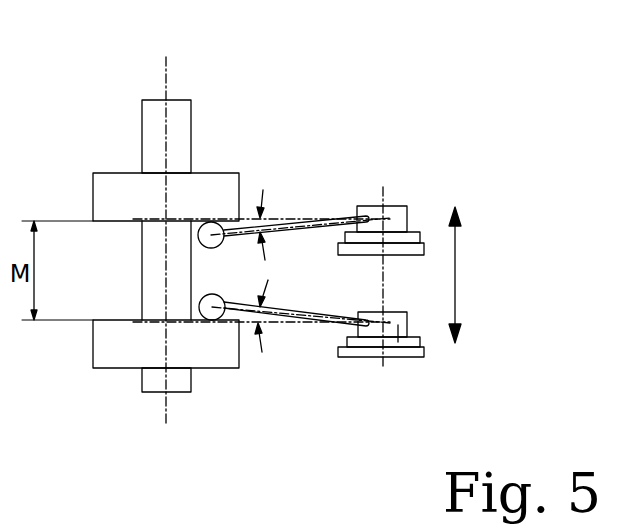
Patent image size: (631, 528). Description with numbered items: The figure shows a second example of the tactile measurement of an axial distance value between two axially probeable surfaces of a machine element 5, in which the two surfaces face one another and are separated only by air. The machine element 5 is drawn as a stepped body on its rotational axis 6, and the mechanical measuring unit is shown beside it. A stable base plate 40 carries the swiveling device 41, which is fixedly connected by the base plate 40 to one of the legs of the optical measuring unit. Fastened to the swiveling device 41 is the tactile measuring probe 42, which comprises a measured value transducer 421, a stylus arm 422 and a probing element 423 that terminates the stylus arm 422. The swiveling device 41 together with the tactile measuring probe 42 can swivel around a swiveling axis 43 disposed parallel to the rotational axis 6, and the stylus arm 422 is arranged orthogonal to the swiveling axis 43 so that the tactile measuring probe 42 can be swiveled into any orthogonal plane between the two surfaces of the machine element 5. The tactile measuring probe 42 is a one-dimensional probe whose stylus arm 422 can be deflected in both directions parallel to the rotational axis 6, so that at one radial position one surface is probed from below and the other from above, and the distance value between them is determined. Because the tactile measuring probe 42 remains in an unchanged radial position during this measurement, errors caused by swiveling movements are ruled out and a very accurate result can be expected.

The machine element 5 is at (105, 349).
The rotational axis 6 is at (163, 90).
The base plate 40 is at (423, 355).
The swiveling device 41 is at (415, 340).
The tactile measuring probe 42 is at (334, 328).
The measured value transducer 421 is at (434, 374).
The stylus arm 422 is at (280, 325).
The probing element 423 is at (217, 319).
The swiveling axis 43 is at (382, 188).